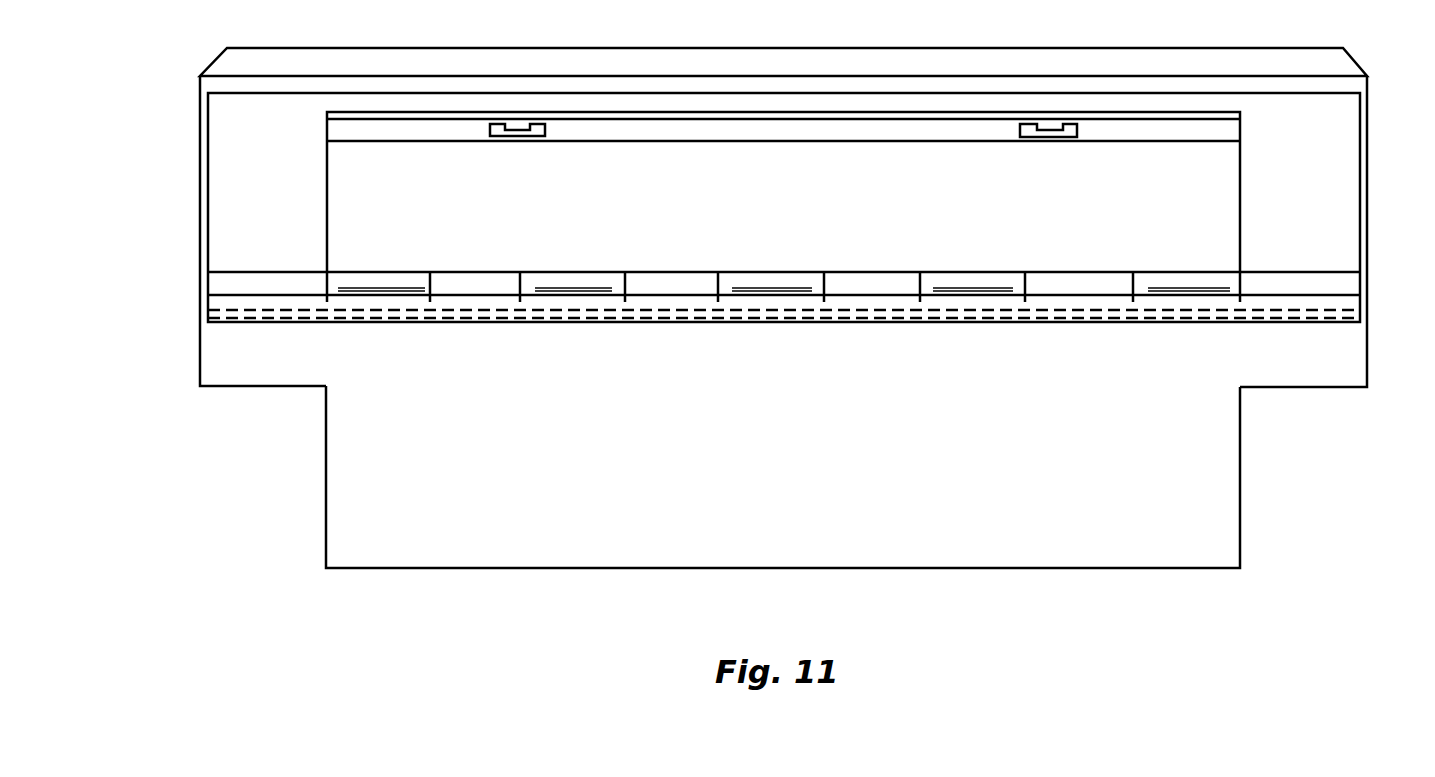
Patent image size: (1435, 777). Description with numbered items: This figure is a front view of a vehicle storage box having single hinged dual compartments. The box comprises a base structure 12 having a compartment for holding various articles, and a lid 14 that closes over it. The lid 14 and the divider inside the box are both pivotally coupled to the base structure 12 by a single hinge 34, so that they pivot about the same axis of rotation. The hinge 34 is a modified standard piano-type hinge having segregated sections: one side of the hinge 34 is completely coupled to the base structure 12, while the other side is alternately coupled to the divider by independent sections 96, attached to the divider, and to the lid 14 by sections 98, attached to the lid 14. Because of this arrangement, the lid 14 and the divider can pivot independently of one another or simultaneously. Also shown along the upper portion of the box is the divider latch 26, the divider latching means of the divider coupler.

The lid 14 is at (227, 112).
The base structure 12 is at (385, 549).
The hinge 34 is at (208, 313).
The divider latch 26 is at (493, 136).
The hinge sections attached to lid 98 is at (252, 285).
The hinge sections attached to divider 96 is at (380, 280).